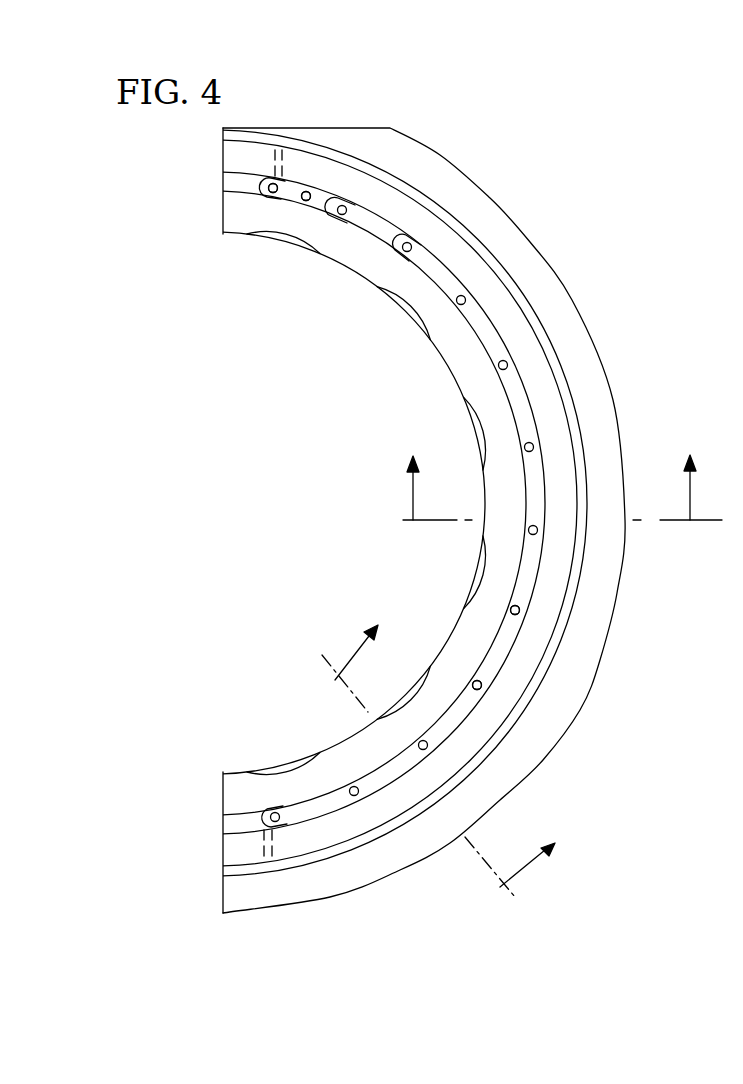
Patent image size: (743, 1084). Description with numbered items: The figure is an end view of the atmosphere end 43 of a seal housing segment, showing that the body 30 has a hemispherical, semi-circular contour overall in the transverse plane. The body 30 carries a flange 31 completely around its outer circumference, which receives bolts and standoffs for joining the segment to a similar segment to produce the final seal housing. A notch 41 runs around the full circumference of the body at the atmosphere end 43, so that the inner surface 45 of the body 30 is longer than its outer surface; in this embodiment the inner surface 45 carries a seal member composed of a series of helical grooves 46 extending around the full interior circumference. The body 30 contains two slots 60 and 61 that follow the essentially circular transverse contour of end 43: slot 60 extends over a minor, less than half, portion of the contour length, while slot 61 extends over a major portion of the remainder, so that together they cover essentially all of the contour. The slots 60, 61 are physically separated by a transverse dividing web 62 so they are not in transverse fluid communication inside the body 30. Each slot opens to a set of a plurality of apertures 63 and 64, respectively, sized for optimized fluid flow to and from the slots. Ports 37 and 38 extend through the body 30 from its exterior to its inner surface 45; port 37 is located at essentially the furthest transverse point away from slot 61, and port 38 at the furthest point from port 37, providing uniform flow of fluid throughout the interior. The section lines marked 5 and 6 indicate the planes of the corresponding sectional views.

The body 30 is at (553, 469).
The flange 31 is at (485, 215).
The port 37 is at (272, 153).
The port 38 is at (275, 848).
The notch 41 is at (307, 142).
The atmosphere end 43 is at (632, 343).
The inner surface 45 is at (450, 392).
The helical grooves 46 is at (417, 315).
The slot 60 is at (327, 199).
The slot 61 is at (438, 274).
The transverse dividing web 62 is at (373, 225).
The apertures 63 is at (306, 203).
The apertures 64 is at (481, 685).
The section line 5- 5 is at (427, 770).
The section line 6- 6 is at (562, 508).